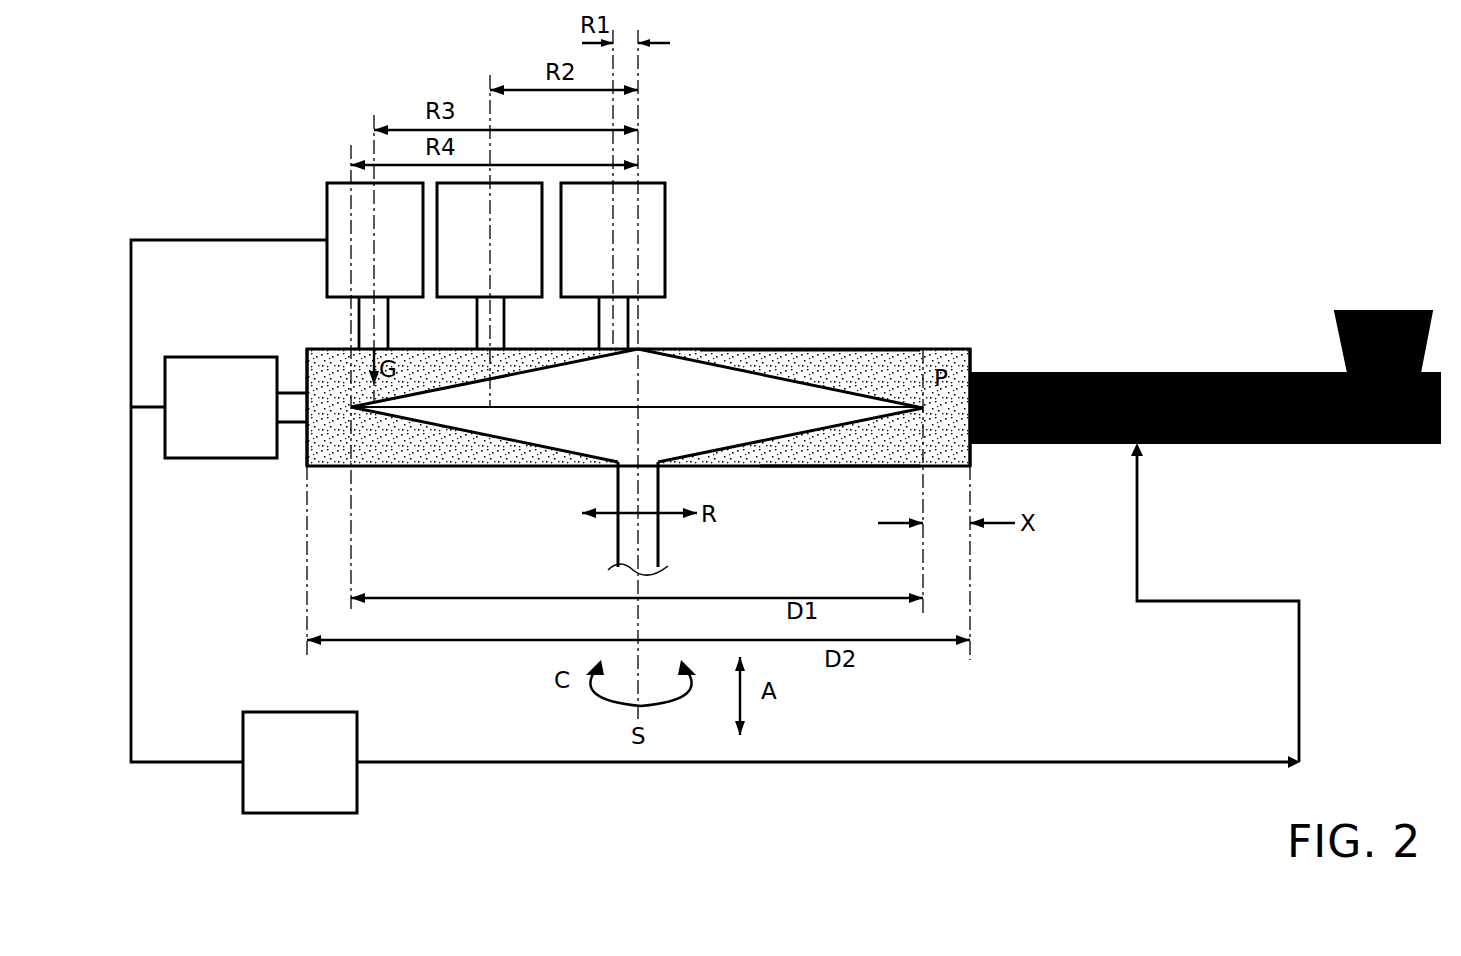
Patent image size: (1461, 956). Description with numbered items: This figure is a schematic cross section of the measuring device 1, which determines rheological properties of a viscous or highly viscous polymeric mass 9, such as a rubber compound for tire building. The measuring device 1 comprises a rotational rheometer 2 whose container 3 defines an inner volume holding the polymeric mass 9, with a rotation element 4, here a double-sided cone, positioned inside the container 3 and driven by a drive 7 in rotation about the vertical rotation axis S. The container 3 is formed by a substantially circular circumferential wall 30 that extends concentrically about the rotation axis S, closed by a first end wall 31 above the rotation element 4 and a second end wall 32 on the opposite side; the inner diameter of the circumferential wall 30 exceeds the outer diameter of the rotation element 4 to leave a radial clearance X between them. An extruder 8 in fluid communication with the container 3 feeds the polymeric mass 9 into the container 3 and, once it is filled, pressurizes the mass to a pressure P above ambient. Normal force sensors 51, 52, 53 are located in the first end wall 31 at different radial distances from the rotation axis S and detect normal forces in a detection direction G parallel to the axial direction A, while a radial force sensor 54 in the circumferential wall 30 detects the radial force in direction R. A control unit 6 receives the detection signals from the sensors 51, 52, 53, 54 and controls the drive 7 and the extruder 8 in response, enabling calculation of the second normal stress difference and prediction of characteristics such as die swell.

The measuring device 1 is at (1108, 165).
The rheometer 2 is at (212, 150).
The container 3 is at (415, 467).
The rotation element 4 is at (563, 435).
The control unit 6 is at (312, 778).
The drive 7 is at (628, 543).
The extruder 8 is at (1327, 443).
The polymeric mass 9 is at (885, 349).
The circumferential wall 30 is at (307, 365).
The first end wall 31 is at (797, 349).
The second end wall 32 is at (830, 468).
The first normal force sensor 51 is at (602, 241).
The second normal force sensor 52 is at (478, 241).
The third normal force sensor 53 is at (416, 241).
The radial force sensor 54 is at (230, 418).